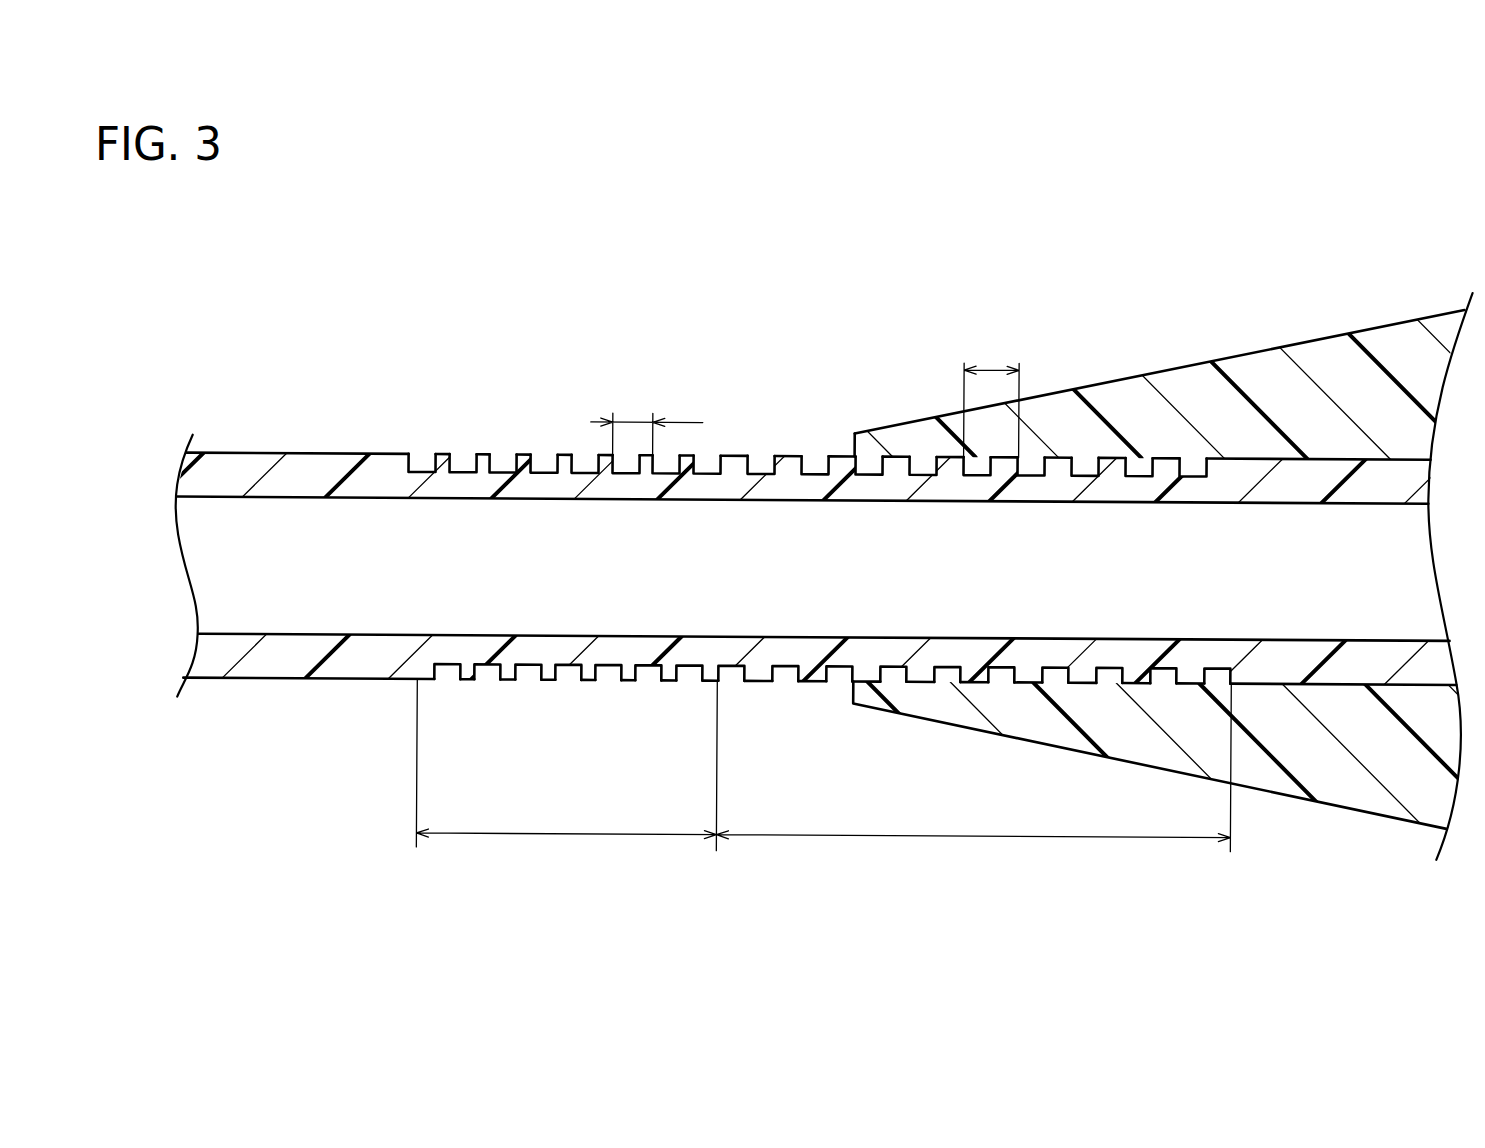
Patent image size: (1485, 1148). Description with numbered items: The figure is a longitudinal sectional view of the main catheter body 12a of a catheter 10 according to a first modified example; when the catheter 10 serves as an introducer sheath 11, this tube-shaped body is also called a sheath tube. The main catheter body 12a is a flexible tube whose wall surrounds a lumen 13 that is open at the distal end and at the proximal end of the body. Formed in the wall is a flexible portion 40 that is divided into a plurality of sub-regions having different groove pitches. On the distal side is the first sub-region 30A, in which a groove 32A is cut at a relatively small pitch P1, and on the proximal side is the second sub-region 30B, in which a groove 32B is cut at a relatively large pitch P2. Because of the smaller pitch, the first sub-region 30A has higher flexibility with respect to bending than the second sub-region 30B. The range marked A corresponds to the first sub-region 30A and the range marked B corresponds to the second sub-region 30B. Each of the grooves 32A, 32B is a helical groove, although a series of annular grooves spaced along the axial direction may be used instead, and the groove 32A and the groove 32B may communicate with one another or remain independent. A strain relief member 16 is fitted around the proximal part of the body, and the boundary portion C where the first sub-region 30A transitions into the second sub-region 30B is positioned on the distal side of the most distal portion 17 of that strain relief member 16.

The catheter 10 is at (815, 549).
The introducer sheath 11 is at (604, 271).
The main catheter body 12a is at (300, 440).
The lumen 13 is at (335, 597).
The strain relief member 16 is at (1118, 398).
The most distal portion 17 is at (854, 433).
The first sub-region 30A is at (483, 453).
The second sub-region 30B is at (842, 456).
The groove 32A is at (528, 667).
The groove 32B is at (780, 686).
The flexible portion 40 is at (541, 442).
The pitch P1 is at (647, 422).
The pitch P2 is at (992, 395).
The range A is at (566, 764).
The range B is at (973, 766).
The boundary portion C is at (715, 786).